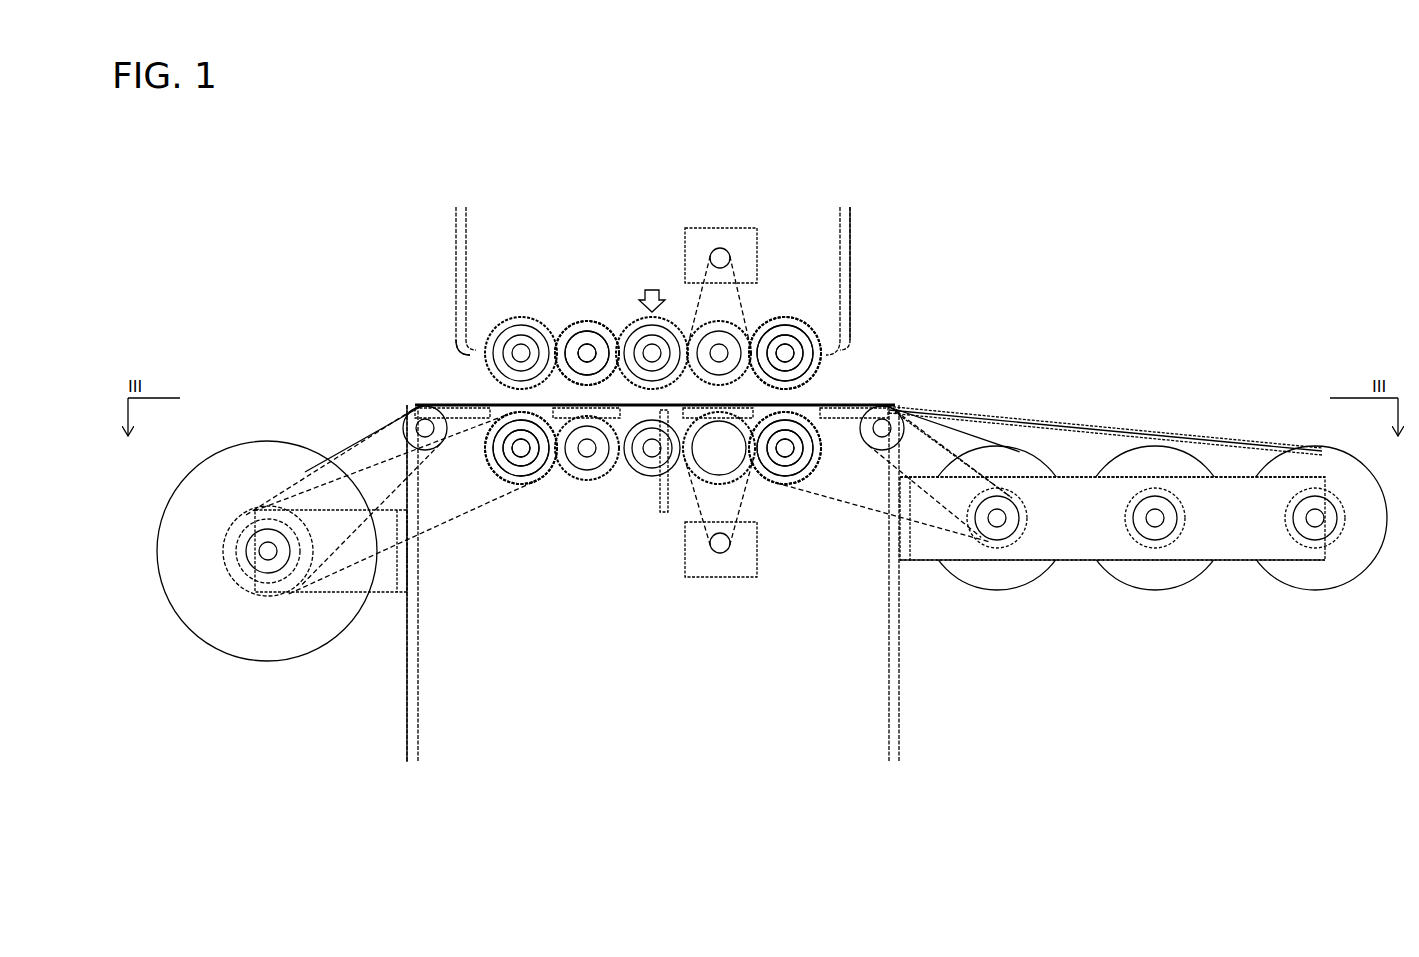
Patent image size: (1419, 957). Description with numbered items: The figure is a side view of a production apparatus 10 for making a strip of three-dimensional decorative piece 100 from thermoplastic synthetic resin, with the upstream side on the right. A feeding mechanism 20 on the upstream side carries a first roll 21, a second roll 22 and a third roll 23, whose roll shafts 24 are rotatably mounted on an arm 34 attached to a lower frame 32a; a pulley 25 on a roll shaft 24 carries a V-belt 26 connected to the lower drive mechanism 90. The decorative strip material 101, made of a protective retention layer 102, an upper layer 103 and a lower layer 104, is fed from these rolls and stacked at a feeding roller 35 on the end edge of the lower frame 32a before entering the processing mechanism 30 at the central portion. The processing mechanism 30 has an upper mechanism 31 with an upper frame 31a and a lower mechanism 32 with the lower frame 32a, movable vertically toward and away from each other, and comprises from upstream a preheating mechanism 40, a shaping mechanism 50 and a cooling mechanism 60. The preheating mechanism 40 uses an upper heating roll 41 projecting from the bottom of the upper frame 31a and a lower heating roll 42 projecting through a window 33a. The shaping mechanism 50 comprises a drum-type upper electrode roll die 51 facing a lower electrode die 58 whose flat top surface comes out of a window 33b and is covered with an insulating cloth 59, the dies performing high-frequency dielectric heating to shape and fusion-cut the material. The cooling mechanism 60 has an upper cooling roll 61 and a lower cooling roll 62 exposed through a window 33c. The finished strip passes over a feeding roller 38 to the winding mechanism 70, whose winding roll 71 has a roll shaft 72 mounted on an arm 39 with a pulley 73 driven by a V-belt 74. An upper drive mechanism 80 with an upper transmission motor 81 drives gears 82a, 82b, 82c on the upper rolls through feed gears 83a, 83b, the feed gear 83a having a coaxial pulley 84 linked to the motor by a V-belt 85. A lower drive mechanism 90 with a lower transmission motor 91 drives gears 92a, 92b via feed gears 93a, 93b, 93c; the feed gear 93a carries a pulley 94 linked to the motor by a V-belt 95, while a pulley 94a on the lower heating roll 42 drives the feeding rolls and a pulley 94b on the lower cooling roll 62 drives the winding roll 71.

The production apparatus 10 is at (1042, 184).
The feeding mechanism 20 is at (1097, 452).
The first roll 21 is at (1320, 590).
The second roll 22 is at (1155, 590).
The third roll 23 is at (1002, 590).
The roll shaft 24 is at (1002, 522).
The pulley 25 is at (1018, 482).
The V-belt 26 is at (937, 530).
The processing mechanism 30 is at (905, 258).
The upper mechanism 31 is at (881, 236).
The upper frame 31a is at (851, 212).
The lower mechanism 32 is at (691, 583).
The lower frame 32a is at (890, 660).
The window 33a is at (846, 408).
The window 33b is at (625, 420).
The window 33c is at (470, 408).
The arm 34 is at (1238, 556).
The feeding roller 35 is at (905, 412).
The feeding roller 38 is at (424, 405).
The arm 39 is at (388, 594).
The preheating mechanism 40 is at (797, 270).
The upper heating roll 41 is at (822, 345).
The lower heating roll 42 is at (818, 478).
The shaping mechanism 50 is at (688, 253).
The upper electrode roll die 51 is at (600, 322).
The lower electrode die 58 is at (663, 500).
The insulating cloth 59 is at (640, 477).
The cooling mechanism 60 is at (450, 281).
The upper cooling roll 61 is at (464, 346).
The lower cooling roll 62 is at (515, 485).
The winding mechanism 70 is at (346, 471).
The winding roll 71 is at (287, 452).
The roll shaft 72 is at (270, 563).
The pulley 73 is at (258, 566).
The V-belt 74 is at (331, 600).
The upper drive mechanism 80 is at (715, 245).
The upper transmission motor 81 is at (757, 238).
The gear 82a is at (803, 322).
The gear 82b is at (648, 317).
The gear 82c is at (521, 317).
The feed gear 83a is at (738, 322).
The feed gear 83b is at (578, 322).
The pulley 84 is at (652, 274).
The V-belt 85 is at (724, 250).
The lower drive mechanism 90 is at (713, 560).
The lower transmission motor 91 is at (752, 578).
The gear 92a is at (816, 475).
The gear 92b is at (499, 480).
The feed gear 93a is at (739, 488).
The feed gear 93b is at (641, 505).
The feed gear 93c is at (583, 481).
The pulley 94 is at (698, 478).
The pulley 94a is at (805, 458).
The pulley 94b is at (500, 465).
The V-belt 95 is at (722, 553).
The strip of three-dimensional decorative piece 100 is at (405, 394).
The decorative strip material 101 is at (880, 405).
The protective retention layer 102 is at (1022, 418).
The upper layer 103 is at (985, 420).
The lower layer 104 is at (935, 420).